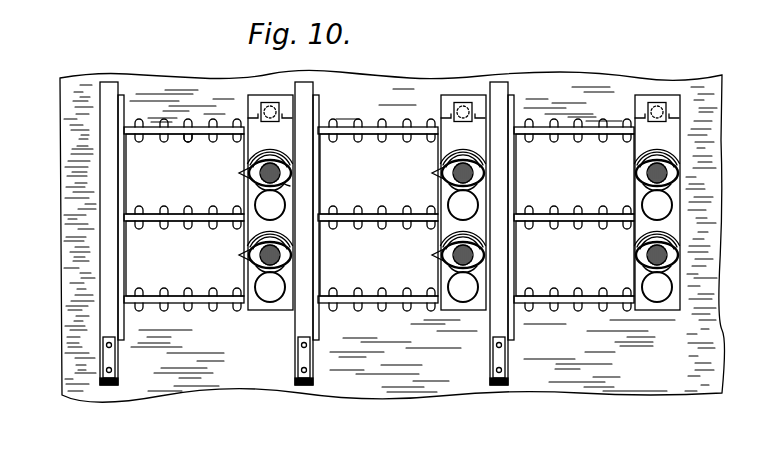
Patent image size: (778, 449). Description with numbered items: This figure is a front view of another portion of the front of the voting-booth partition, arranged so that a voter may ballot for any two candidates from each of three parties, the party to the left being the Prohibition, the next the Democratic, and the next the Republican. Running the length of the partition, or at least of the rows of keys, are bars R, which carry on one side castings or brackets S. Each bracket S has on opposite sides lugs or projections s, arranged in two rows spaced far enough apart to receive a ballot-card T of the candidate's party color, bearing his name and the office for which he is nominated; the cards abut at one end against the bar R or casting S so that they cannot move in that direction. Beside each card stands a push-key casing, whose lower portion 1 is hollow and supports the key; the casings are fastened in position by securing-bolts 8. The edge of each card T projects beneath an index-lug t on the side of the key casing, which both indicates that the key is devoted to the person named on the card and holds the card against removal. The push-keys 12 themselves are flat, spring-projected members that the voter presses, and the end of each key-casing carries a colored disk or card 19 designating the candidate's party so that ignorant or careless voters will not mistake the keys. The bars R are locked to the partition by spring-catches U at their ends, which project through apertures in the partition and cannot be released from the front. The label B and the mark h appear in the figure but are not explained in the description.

The base board B is at (392, 236).
The bar R is at (103, 167).
The spring-catch U is at (300, 368).
The bracket S is at (202, 127).
The lug s is at (190, 141).
The ballot-card T is at (380, 215).
The index-lug t is at (242, 171).
The hub column h is at (464, 202).
The securing-bolt 8 is at (667, 105).
The disk or card 19 is at (672, 252).
The push-key 12 is at (284, 213).
The lower casing part 1 is at (292, 185).